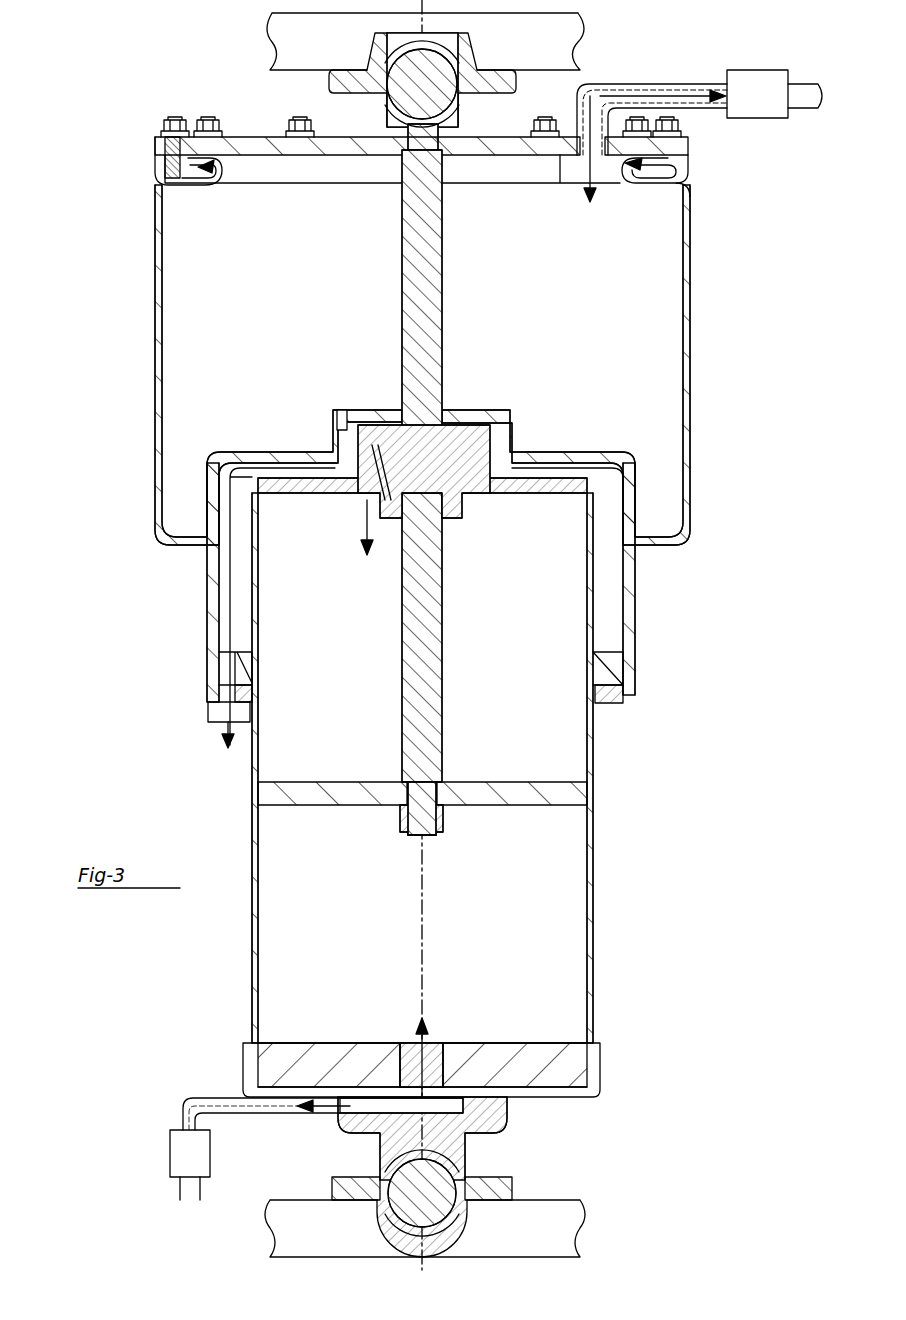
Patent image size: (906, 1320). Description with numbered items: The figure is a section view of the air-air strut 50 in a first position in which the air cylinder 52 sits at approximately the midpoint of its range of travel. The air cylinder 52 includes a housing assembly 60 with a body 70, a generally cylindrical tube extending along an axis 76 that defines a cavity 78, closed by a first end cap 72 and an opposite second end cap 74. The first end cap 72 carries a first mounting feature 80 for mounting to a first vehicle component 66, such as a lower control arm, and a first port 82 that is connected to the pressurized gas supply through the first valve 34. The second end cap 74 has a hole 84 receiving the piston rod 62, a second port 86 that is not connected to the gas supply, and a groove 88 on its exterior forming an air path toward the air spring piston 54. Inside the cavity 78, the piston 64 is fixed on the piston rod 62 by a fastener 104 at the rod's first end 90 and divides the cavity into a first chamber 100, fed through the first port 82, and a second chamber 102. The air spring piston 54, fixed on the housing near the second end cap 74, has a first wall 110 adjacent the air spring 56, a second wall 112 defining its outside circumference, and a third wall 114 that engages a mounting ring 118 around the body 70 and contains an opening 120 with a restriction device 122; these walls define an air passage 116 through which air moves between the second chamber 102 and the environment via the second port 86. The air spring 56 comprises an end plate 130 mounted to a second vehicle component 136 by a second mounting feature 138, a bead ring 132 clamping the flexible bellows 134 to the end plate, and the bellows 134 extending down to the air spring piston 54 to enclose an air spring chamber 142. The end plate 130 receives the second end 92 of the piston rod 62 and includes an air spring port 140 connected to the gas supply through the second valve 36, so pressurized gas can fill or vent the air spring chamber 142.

The air-air strut 50 is at (121, 74).
The air cylinder 52 is at (252, 946).
The air spring piston 54 is at (208, 582).
The air spring 56 is at (154, 212).
The housing assembly 60 is at (597, 858).
The piston rod 62 is at (445, 614).
The piston 64 is at (500, 781).
The first vehicle component 66 is at (330, 1240).
The body 70 is at (595, 920).
The first end cap 72 is at (510, 1112).
The second end cap 74 is at (540, 494).
The axis 76 is at (440, 238).
The cavity 78 is at (577, 1008).
The first mounting feature 80 is at (512, 1192).
The first port 82 is at (350, 1133).
The hole 84 is at (468, 500).
The second port 86 is at (360, 444).
The groove 88 is at (290, 456).
The first end 90 is at (415, 838).
The second end 92 is at (440, 135).
The first chamber 100 is at (328, 899).
The second chamber 102 is at (361, 625).
The fastener 104 is at (445, 820).
The first wall 110 is at (540, 452).
The second wall 112 is at (640, 586).
The third wall 114 is at (612, 652).
The air passage 116 is at (242, 592).
The mounting ring 118 is at (612, 704).
The opening 120 is at (220, 660).
The restriction device 122 is at (222, 726).
The end plate 130 is at (232, 137).
The bead ring 132 is at (690, 160).
The flexible bellows 134 is at (690, 343).
The second vehicle component 136 is at (334, 55).
The second mounting feature 138 is at (330, 82).
The air spring port 140 is at (598, 86).
The air spring chamber 142 is at (318, 341).
The first valve 34 is at (200, 1164).
The second valve 36 is at (767, 106).